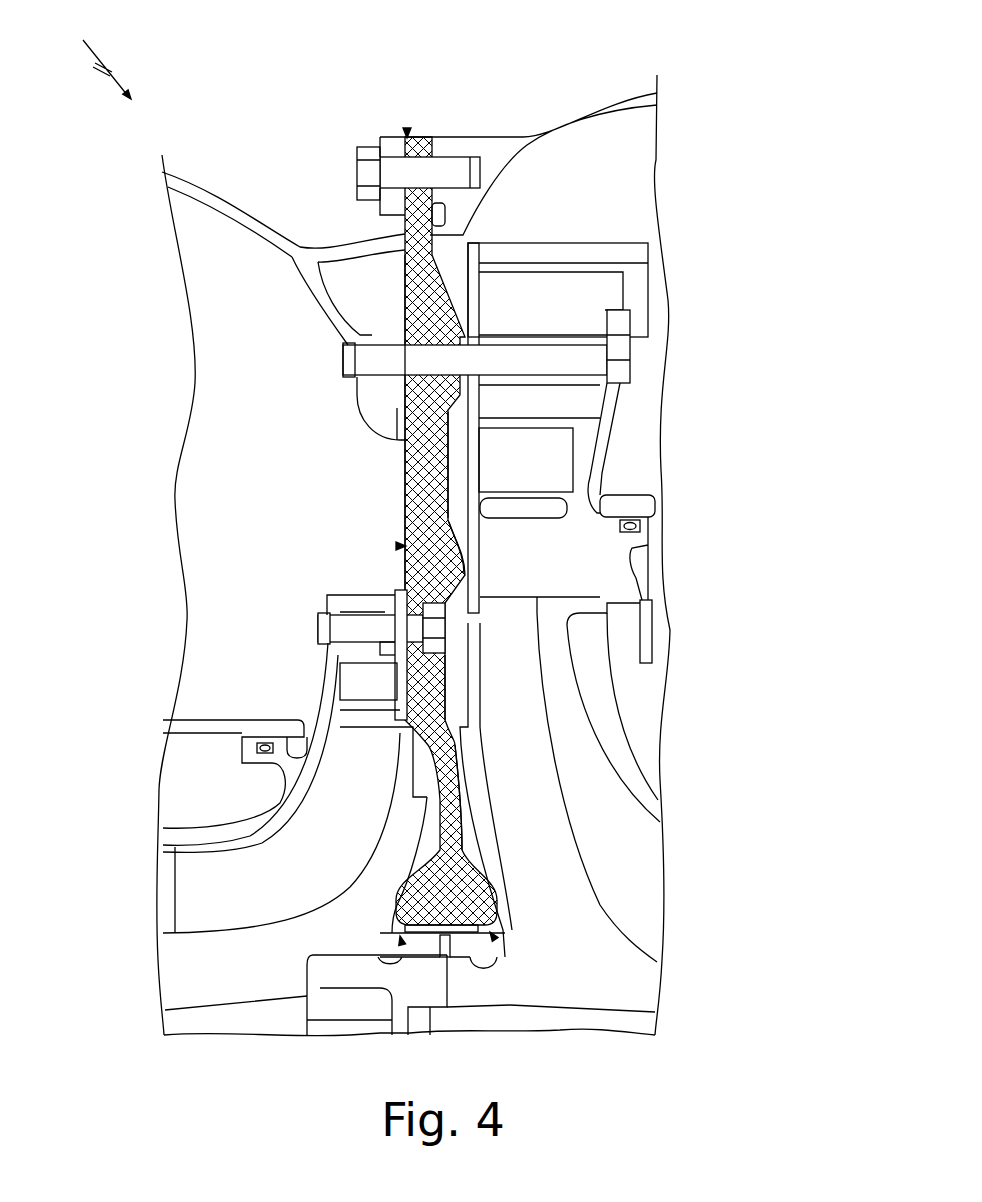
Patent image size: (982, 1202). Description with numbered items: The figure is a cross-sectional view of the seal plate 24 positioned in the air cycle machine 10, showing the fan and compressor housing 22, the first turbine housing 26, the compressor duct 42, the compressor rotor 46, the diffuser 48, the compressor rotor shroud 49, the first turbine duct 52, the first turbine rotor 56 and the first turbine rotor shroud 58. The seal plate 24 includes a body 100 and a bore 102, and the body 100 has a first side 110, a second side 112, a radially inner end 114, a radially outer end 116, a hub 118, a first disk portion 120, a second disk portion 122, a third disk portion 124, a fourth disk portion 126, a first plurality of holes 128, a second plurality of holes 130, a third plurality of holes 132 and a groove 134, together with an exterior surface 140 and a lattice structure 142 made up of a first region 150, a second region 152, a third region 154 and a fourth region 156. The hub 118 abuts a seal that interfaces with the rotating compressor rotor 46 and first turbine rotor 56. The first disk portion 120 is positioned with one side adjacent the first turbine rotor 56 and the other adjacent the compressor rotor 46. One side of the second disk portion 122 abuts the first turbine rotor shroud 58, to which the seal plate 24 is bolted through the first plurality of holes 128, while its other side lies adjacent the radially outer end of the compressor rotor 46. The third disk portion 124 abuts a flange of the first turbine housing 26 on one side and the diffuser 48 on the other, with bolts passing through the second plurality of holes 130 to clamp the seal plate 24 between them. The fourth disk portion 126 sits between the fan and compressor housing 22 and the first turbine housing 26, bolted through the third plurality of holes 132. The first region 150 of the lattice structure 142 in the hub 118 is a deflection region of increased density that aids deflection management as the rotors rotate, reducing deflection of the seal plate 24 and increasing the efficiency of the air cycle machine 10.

The air cycle machine 10 is at (94, 57).
The fan and compressor housing 22 is at (626, 100).
The seal plate 24 is at (480, 292).
The first turbine housing 26 is at (212, 198).
The compressor duct 42 is at (592, 185).
The compressor rotor 46 is at (600, 967).
The diffuser 48 is at (585, 440).
The compressor rotor shroud 49 is at (560, 700).
The first turbine duct 52 is at (225, 362).
The first turbine rotor 56 is at (208, 968).
The first turbine rotor shroud 58 is at (290, 789).
The body 100 is at (410, 490).
The bore 102 is at (495, 939).
The first side 110 is at (398, 547).
The second side 112 is at (465, 565).
The radially inner end 114 is at (402, 944).
The radially outer end 116 is at (409, 134).
The hub 118 is at (490, 898).
The first disk portion 120 is at (445, 762).
The second disk portion 122 is at (398, 665).
The third disk portion 124 is at (479, 397).
The fourth disk portion 126 is at (405, 240).
The first plurality of holes 128 is at (335, 648).
The second plurality of holes 130 is at (405, 395).
The third plurality of holes 132 is at (431, 135).
The groove 134 is at (405, 213).
The exterior surface 140 is at (410, 458).
The lattice structure 142 is at (455, 518).
The first region 150 is at (393, 900).
The second region 152 is at (447, 805).
The third region 154 is at (440, 685).
The fourth region 156 is at (447, 463).